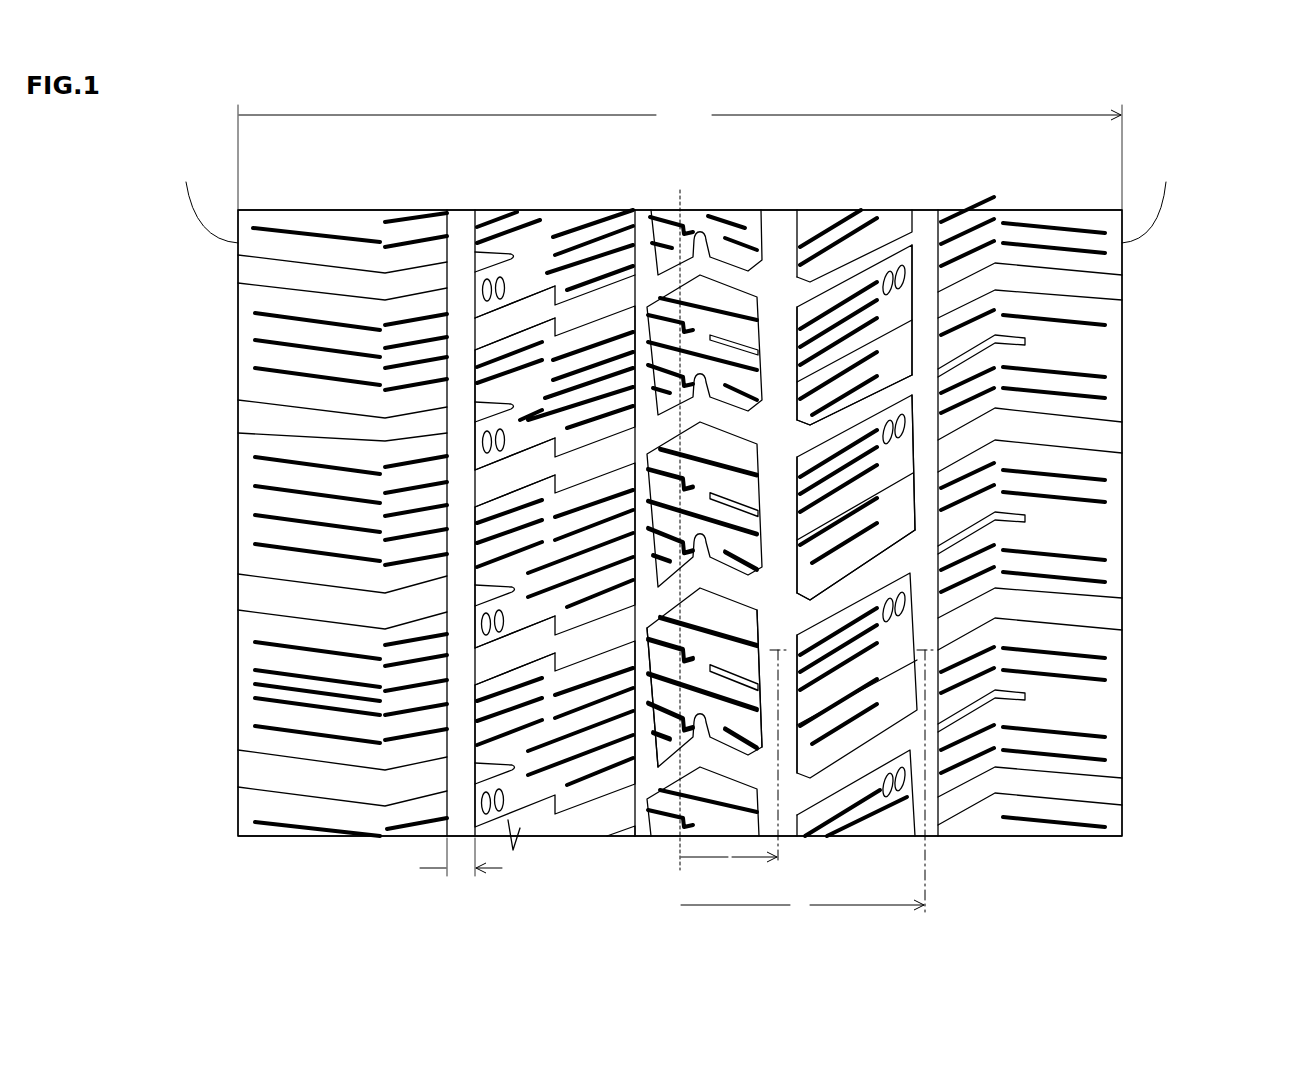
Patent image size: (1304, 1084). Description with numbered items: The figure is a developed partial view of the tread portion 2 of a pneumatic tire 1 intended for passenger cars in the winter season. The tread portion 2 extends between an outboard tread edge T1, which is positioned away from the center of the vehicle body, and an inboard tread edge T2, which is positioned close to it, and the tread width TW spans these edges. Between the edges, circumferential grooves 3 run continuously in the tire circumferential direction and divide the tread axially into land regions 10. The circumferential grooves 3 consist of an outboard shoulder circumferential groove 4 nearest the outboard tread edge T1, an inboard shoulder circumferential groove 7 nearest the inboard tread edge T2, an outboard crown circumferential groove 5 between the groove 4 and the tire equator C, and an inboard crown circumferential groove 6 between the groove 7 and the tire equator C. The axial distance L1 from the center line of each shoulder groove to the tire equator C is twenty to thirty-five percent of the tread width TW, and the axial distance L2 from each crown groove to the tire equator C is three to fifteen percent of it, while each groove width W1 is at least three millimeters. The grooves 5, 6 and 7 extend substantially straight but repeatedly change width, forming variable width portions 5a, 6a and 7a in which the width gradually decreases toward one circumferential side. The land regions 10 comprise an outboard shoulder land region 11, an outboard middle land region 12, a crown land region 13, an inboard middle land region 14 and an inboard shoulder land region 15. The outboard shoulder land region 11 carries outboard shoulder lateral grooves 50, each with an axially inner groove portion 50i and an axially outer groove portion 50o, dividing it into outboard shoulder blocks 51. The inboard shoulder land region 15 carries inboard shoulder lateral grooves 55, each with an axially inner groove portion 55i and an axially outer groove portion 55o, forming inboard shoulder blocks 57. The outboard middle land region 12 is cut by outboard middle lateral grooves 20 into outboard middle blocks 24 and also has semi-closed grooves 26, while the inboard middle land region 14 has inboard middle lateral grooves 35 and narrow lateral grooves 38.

The pneumatic tire 1 is at (980, 200).
The tread portion 2 is at (388, 203).
The circumferential grooves 3 is at (460, 298).
The outboard shoulder circumferential groove 4 is at (461, 250).
The outboard crown circumferential groove 5 is at (642, 240).
The variable width portions 5a is at (642, 700).
The inboard crown circumferential groove 6 is at (780, 245).
The variable width portions 6a is at (788, 727).
The inboard shoulder circumferential groove 7 is at (925, 245).
The variable width portions 7a is at (925, 432).
The land regions 10 is at (285, 250).
The outboard shoulder land region 11 is at (334, 252).
The outboard middle land region 12 is at (545, 245).
The crown land region 13 is at (715, 240).
The inboard middle land region 14 is at (845, 240).
The inboard shoulder land region 15 is at (1030, 240).
The outboard middle lateral grooves 20 is at (512, 478).
The outboard middle blocks 24 is at (565, 405).
The semi-closed grooves 26 is at (490, 596).
The inboard middle lateral grooves 35 is at (846, 593).
The narrow lateral grooves 38 is at (888, 333).
The outboard shoulder lateral grooves 50 is at (269, 673).
The axially outer groove portion 50o is at (326, 603).
The axially inner groove portion 50i is at (416, 607).
The outboard shoulder blocks 51 is at (358, 694).
The inboard shoulder lateral grooves 55 is at (1108, 744).
The axially outer groove portion 55o is at (1043, 787).
The axially inner groove portion 55i is at (967, 795).
The inboard shoulder blocks 57 is at (1053, 702).
The tire equator C is at (680, 514).
The outboard tread edge T1 is at (204, 197).
The inboard tread edge T2 is at (1155, 197).
The tread width TW is at (680, 155).
The groove width W1 is at (470, 861).
The axial distance L1 is at (807, 795).
The axial distance L2 is at (734, 773).